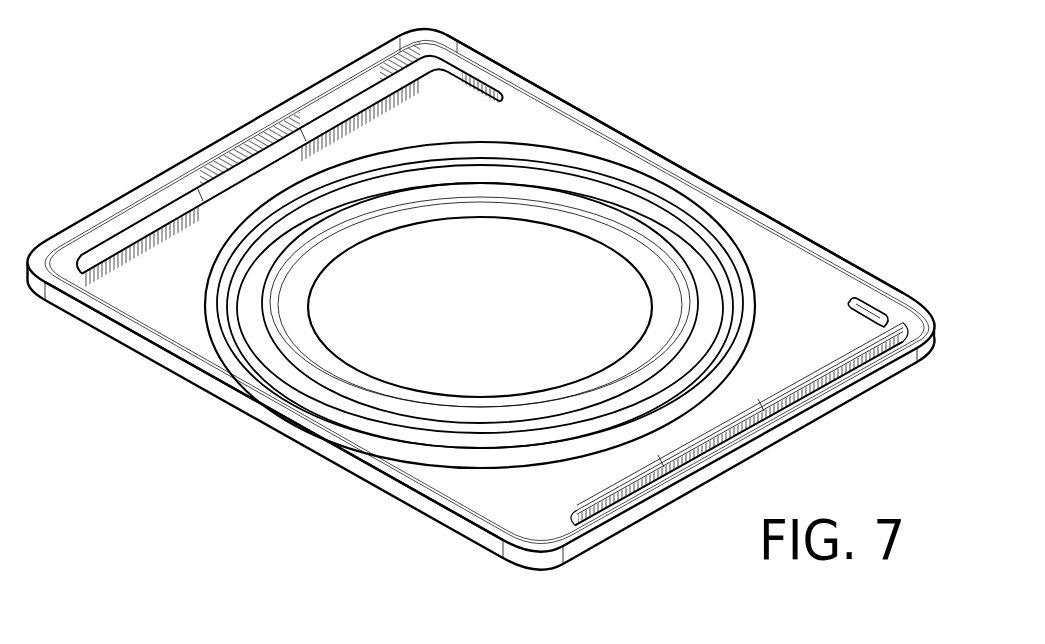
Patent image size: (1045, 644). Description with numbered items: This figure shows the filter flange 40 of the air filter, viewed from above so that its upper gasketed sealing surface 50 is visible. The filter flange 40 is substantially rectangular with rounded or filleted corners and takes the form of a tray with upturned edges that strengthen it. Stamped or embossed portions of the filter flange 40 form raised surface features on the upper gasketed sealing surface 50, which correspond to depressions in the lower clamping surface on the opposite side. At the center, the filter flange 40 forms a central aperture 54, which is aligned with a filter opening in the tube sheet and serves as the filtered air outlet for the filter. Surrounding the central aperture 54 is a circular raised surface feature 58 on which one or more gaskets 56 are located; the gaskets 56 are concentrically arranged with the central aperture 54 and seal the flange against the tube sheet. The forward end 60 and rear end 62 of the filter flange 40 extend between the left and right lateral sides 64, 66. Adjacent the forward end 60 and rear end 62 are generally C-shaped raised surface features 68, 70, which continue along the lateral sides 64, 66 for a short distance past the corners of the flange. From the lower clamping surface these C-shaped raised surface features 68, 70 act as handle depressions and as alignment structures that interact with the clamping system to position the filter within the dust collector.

The filter flange 40 is at (866, 392).
The upper gasketed sealing surface 50 is at (512, 110).
The central aperture 54 is at (466, 256).
The gaskets 56 is at (601, 183).
The circular raised surface feature 58 is at (746, 262).
The forward end 60 is at (616, 526).
The rear end 62 is at (200, 152).
The lateral side 64 is at (400, 498).
The lateral side 66 is at (586, 108).
The C-shaped raised surface feature 68 is at (876, 305).
The C-shaped raised surface feature 70 is at (383, 92).